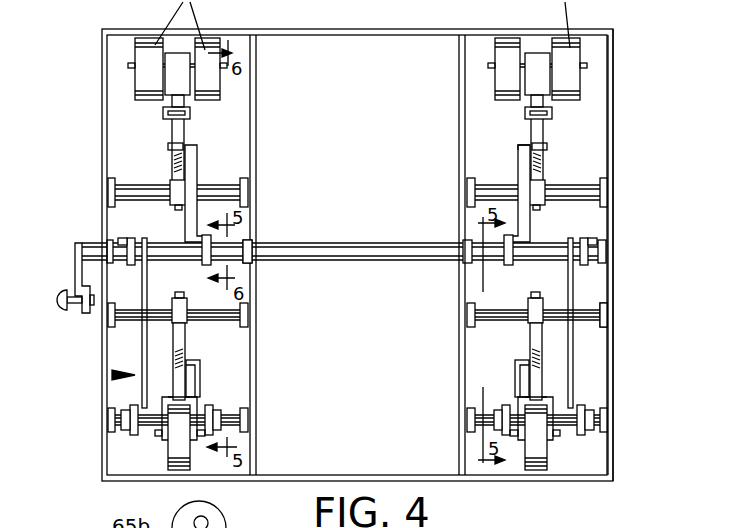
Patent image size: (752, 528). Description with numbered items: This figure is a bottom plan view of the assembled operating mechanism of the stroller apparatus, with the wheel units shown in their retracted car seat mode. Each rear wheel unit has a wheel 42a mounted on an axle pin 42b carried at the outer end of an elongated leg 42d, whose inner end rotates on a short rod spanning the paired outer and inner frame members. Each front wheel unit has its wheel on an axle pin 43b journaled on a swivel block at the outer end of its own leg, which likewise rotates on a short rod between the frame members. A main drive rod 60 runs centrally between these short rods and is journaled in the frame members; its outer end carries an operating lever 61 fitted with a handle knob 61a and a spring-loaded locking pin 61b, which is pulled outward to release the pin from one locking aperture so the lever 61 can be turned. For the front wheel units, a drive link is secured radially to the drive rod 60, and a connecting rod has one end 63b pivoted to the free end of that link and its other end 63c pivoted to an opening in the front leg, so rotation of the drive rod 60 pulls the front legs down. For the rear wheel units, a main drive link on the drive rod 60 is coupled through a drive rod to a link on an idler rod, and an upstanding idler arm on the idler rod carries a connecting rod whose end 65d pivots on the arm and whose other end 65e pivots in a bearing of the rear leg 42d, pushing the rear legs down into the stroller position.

The wheel 42a is at (178, 457).
The axle pin 42b is at (155, 434).
The leg 42d is at (190, 336).
The axle pin 43b is at (133, 67).
The main drive rod 60 is at (343, 260).
The operating lever 61 is at (76, 265).
The handle knob 61a is at (66, 298).
The spring-loaded locking pin 61b is at (86, 310).
The end of connecting rod 63b is at (249, 240).
The other end of connecting rod 63c is at (527, 143).
The end of connecting rod 65d is at (208, 523).
The other end of connecting rod 65e is at (604, 322).